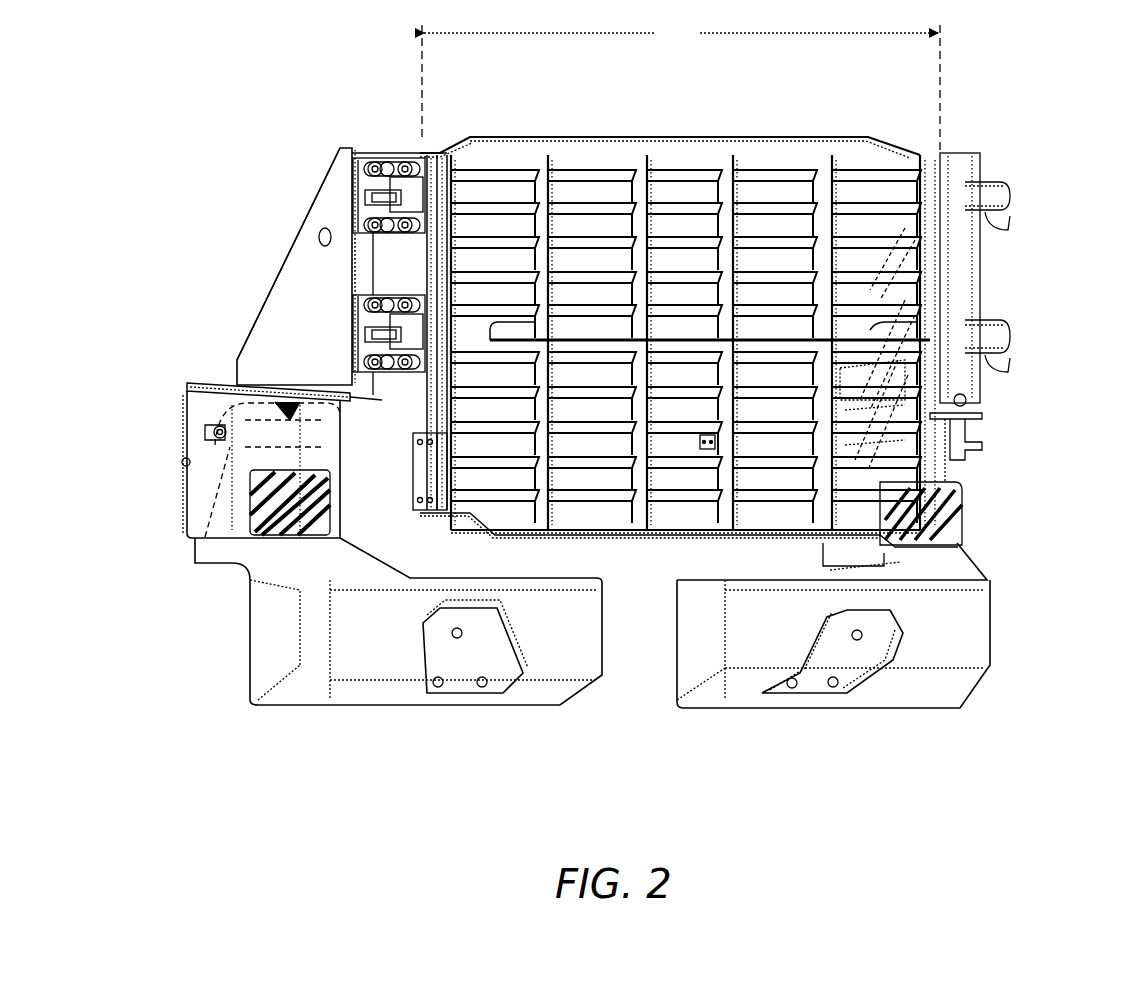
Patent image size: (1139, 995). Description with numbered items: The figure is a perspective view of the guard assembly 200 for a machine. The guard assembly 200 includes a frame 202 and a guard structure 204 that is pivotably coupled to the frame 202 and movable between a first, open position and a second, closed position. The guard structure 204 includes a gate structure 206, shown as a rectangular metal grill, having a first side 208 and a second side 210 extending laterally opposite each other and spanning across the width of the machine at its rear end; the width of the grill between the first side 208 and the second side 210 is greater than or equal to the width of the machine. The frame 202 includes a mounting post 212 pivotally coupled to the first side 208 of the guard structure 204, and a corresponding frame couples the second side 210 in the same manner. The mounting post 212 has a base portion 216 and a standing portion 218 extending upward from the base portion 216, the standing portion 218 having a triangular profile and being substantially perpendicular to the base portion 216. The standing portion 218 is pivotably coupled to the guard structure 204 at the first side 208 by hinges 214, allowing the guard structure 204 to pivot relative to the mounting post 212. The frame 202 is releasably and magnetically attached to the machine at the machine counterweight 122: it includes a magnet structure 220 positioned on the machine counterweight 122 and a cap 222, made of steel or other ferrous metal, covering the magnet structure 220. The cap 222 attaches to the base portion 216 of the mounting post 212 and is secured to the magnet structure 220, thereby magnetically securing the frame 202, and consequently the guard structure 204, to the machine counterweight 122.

The guard assembly 200 is at (988, 72).
The frame 202 is at (175, 404).
The guard structure 204 is at (478, 133).
The gate structure 206 is at (853, 153).
The first side 208 is at (430, 257).
The second side 210 is at (937, 295).
The mounting post 212 is at (295, 235).
The hinges 214 is at (393, 288).
The base portion 216 is at (222, 384).
The standing portion 218 is at (272, 318).
The magnet structure 220 is at (207, 430).
The cap 222 is at (190, 413).
The machine counterweight 122 is at (262, 622).